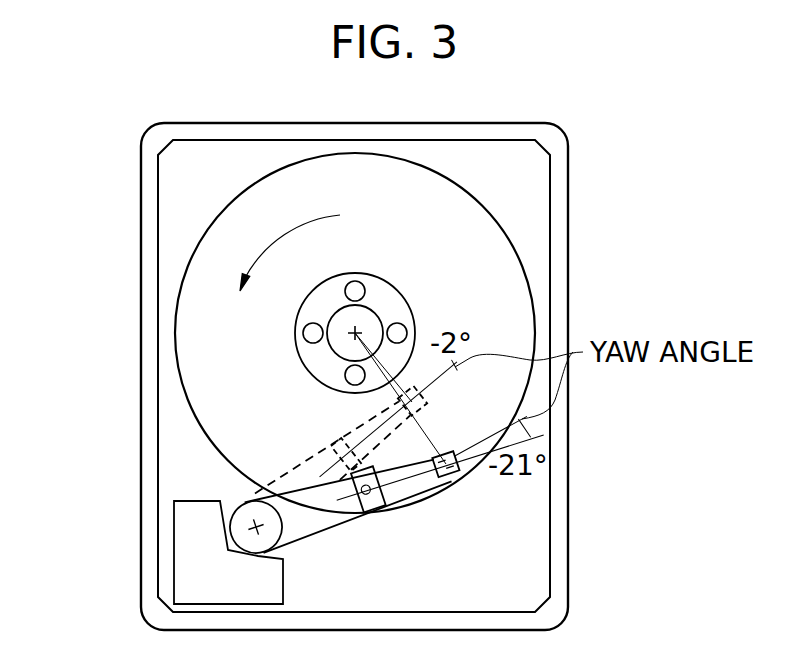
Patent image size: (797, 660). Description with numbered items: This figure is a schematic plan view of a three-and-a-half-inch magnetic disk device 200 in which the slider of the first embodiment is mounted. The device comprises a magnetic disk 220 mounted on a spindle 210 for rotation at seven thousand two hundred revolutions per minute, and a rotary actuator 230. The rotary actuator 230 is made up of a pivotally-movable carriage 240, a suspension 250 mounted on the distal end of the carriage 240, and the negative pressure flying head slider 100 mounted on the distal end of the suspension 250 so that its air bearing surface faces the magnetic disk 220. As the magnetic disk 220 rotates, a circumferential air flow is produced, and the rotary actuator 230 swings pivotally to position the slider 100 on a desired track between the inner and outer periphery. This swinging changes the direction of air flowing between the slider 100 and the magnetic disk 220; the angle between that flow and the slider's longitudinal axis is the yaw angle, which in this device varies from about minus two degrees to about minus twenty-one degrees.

The negative pressure flying head slider 100 is at (452, 480).
The magnetic disk device 200 is at (142, 333).
The spindle 210 is at (388, 300).
The magnetic disk 220 is at (212, 267).
The rotary actuator 230 is at (185, 548).
The carriage 240 is at (320, 516).
The suspension 250 is at (398, 487).